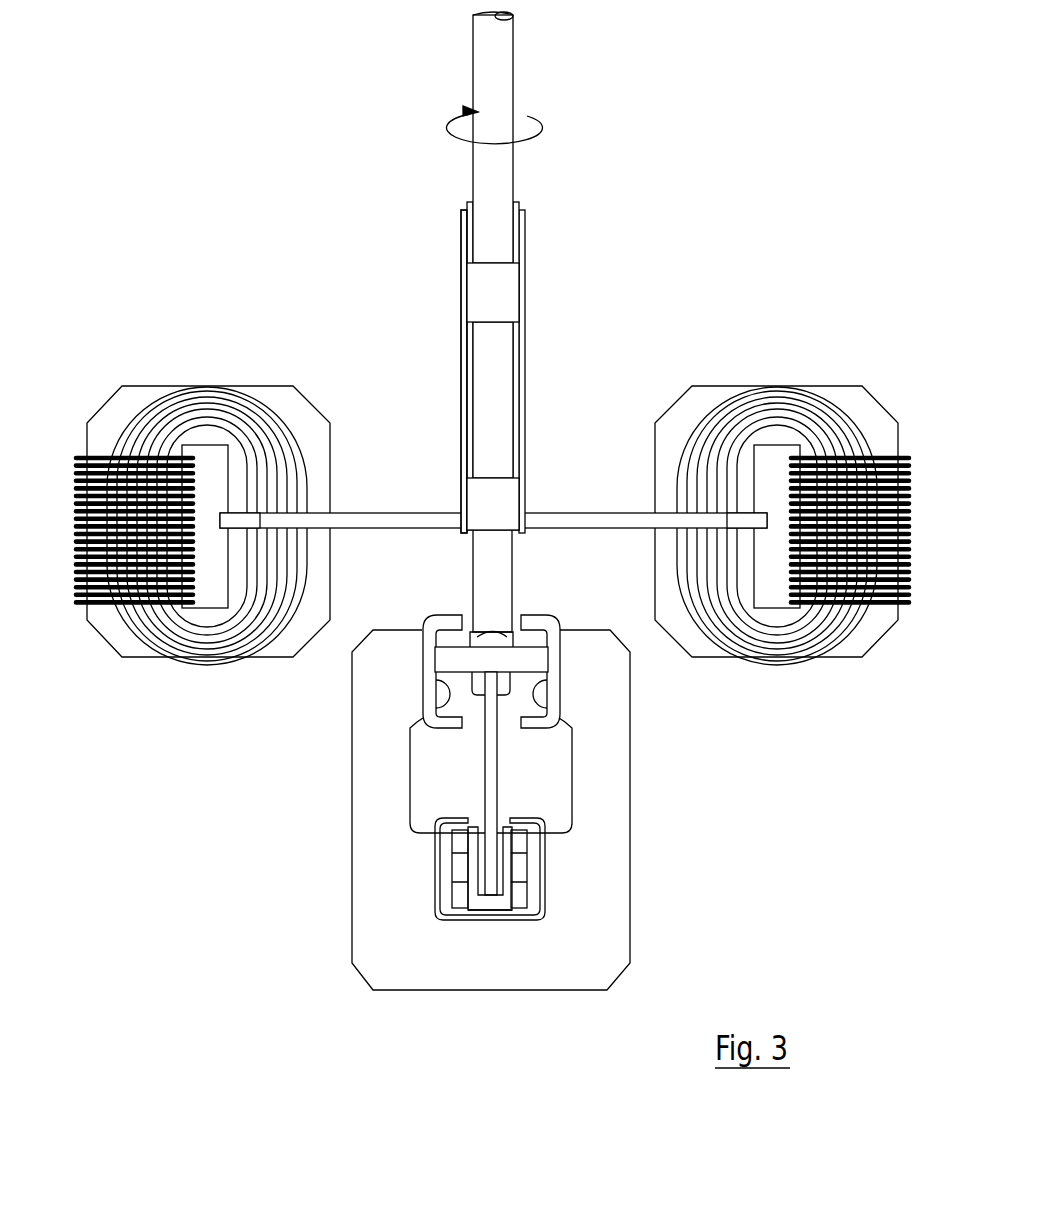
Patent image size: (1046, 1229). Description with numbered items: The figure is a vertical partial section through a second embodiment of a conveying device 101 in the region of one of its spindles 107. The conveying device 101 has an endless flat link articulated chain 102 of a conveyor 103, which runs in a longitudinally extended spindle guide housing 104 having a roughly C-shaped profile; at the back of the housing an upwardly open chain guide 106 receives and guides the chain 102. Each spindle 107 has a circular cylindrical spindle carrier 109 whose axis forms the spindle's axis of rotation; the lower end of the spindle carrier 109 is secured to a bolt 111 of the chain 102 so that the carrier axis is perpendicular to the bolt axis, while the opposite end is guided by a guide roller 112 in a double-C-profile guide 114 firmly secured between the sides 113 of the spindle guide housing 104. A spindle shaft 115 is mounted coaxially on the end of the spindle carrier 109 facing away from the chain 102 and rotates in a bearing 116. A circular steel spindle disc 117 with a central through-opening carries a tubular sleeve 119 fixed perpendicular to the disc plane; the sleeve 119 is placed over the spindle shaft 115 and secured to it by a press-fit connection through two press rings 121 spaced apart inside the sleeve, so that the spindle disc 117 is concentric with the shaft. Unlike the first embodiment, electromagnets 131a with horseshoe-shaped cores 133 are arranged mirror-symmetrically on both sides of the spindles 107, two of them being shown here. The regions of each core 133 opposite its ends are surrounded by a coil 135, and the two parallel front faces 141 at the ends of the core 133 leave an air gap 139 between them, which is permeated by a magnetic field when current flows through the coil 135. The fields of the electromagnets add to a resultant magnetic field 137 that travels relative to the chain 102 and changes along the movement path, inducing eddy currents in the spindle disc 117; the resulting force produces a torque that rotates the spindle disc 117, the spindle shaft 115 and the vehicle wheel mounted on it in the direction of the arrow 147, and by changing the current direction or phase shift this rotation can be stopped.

The conveying device 101 is at (266, 124).
The endless flat link articulated chain 102 is at (456, 892).
The conveyor 103 is at (640, 830).
The spindle guide housing 104 is at (602, 892).
The chain guide 106 is at (535, 920).
The spindle 107 is at (535, 357).
The spindle carrier 109 is at (497, 765).
The bolt 111 is at (438, 845).
The guide roller 112 is at (447, 658).
The sides of the spindle guide housing 113 is at (380, 732).
The double-C-profile guide 114 is at (422, 708).
The spindle shaft 115 is at (490, 177).
The bearing 116 is at (487, 622).
The spindle disc 117 is at (578, 523).
The tubular sleeve 119 is at (462, 287).
The press rings 121 is at (506, 302).
The electromagnet 131a is at (165, 398).
The horseshoe-shaped core 133 is at (313, 433).
The coil 135 is at (75, 600).
The resultant magnetic field 137 is at (260, 423).
The air gap 139 is at (305, 514).
The front faces 141 is at (330, 500).
The arrow 147 is at (545, 130).